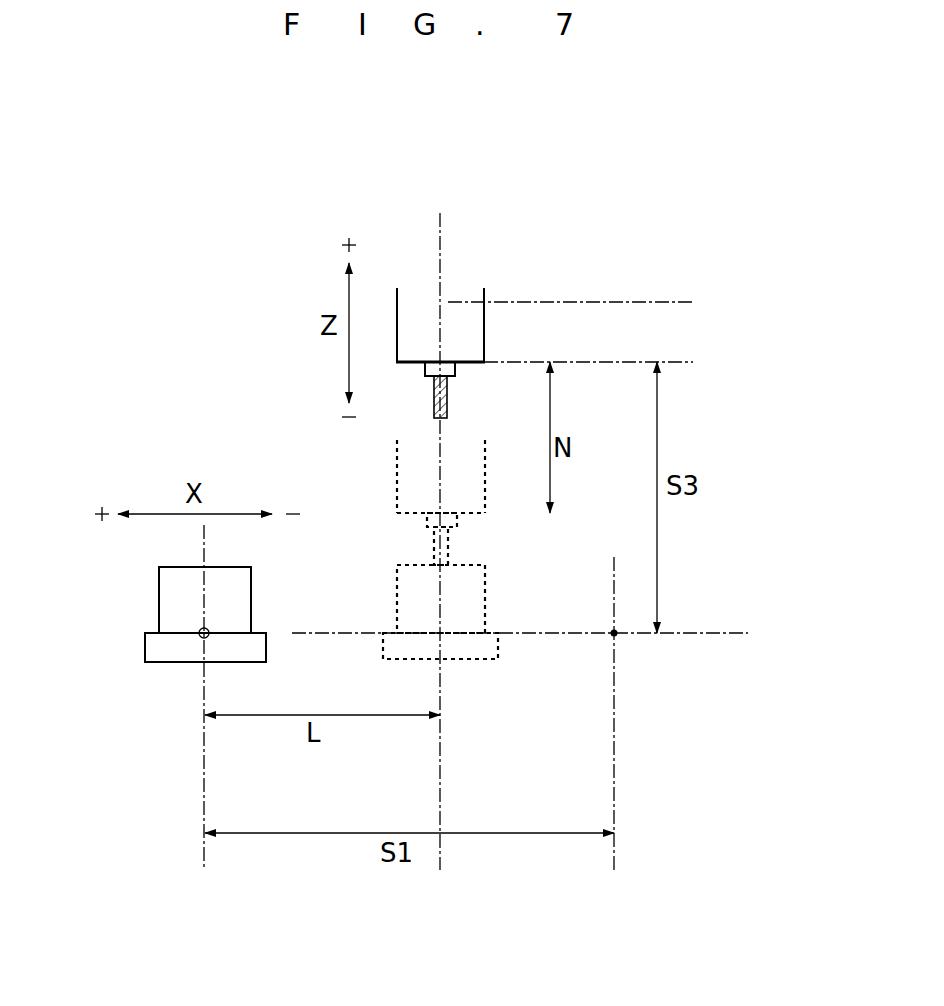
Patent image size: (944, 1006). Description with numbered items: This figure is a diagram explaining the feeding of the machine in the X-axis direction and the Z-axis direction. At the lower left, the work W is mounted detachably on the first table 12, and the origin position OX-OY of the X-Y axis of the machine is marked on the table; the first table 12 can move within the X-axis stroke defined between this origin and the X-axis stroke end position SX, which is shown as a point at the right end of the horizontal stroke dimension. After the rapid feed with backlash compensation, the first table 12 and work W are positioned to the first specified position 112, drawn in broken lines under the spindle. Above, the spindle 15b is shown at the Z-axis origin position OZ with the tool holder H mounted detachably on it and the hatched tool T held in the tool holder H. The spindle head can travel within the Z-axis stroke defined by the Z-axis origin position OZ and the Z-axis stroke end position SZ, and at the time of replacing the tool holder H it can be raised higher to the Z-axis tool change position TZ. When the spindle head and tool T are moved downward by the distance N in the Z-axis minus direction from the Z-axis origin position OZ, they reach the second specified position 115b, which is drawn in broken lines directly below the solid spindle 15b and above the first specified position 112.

The spindle 15b is at (470, 333).
The tool holder H is at (455, 372).
The tool T is at (441, 400).
The second specified position 115b is at (460, 481).
The first specified position 112 is at (467, 609).
The work W is at (172, 594).
The first table 12 is at (160, 652).
The Z-axis tool change position TZ is at (591, 298).
The Z-axis origin position OZ is at (613, 363).
The Z-axis stroke end position SZ is at (540, 633).
The X-axis stroke end position SX is at (614, 636).
The origin position of the X-Y axis OX-OY is at (204, 638).